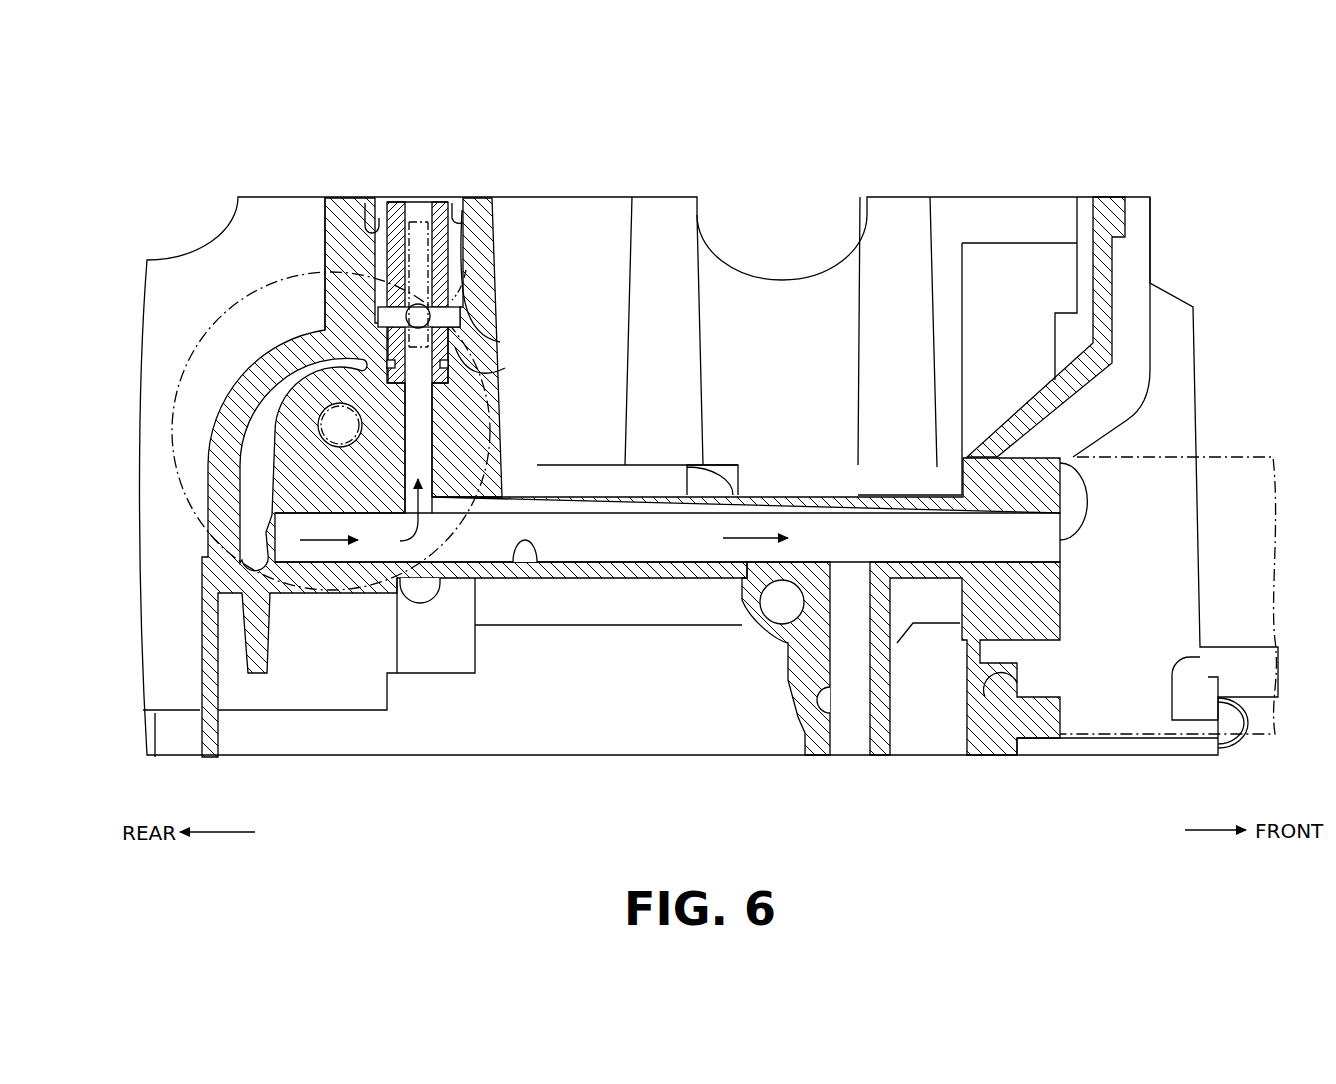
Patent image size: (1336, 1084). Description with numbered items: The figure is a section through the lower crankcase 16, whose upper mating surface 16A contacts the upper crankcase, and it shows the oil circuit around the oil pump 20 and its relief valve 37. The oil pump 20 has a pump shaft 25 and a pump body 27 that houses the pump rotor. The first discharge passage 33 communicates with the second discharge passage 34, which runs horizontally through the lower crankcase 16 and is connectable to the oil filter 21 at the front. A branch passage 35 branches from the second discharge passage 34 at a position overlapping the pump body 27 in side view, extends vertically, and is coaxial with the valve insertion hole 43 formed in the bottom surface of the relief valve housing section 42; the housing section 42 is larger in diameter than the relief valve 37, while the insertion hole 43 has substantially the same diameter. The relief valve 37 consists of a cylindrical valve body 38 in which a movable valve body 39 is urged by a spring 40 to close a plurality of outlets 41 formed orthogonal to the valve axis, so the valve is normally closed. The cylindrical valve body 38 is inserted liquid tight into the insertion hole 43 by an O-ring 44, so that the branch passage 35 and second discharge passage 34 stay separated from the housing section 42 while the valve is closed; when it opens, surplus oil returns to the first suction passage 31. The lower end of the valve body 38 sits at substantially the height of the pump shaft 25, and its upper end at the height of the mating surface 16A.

The lower crankcase 16 is at (1127, 148).
The mating surface 16A is at (663, 197).
The oil pump 20 is at (190, 344).
The oil filter 21 is at (1233, 457).
The pump shaft 25 is at (330, 445).
The pump body 27 is at (172, 397).
The first suction passage 31 is at (412, 657).
The first discharge passage 33 is at (253, 500).
The second discharge passage 34 is at (512, 548).
The branch passage 35 is at (428, 483).
The relief valve 37 is at (452, 202).
The valve body 38 is at (396, 202).
The valve body 39 is at (466, 270).
The spring 40 is at (410, 222).
The outlets 41 is at (483, 213).
The relief valve housing section 42 is at (368, 220).
The valve insertion hole 43 is at (347, 323).
The O-ring 44 is at (514, 215).